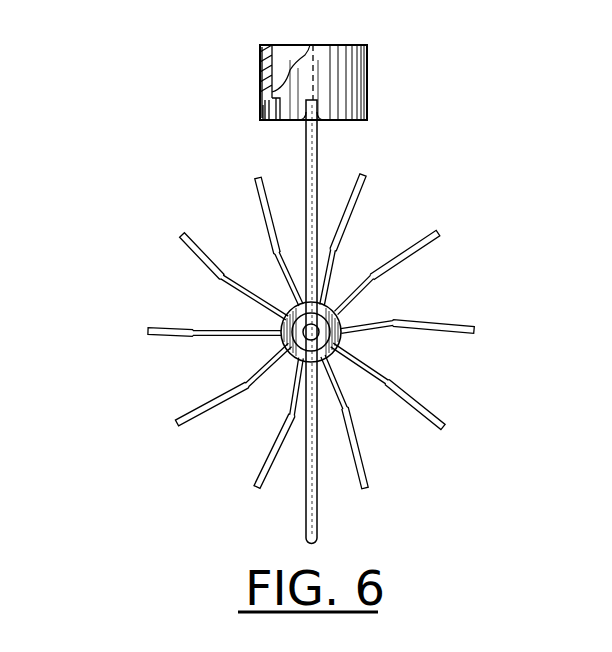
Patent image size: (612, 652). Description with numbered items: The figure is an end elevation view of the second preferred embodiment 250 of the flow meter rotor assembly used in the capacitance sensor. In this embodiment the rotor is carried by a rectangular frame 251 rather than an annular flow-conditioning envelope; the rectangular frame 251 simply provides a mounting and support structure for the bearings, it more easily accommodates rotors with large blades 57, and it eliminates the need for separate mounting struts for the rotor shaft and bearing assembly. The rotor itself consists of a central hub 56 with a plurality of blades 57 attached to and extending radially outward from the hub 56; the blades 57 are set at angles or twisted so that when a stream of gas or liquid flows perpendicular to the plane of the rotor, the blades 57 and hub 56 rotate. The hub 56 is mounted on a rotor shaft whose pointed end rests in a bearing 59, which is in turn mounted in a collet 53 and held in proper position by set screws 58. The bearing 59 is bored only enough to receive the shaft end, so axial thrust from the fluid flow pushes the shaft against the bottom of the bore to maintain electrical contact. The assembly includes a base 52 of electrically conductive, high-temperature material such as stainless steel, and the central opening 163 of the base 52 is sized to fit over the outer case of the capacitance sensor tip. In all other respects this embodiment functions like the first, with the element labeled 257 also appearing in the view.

The base 52 is at (366, 67).
The collet 53 is at (342, 318).
The central hub 56 is at (339, 341).
The blades 57 is at (217, 275).
The set screws 58 is at (320, 340).
The bearing 59 is at (287, 345).
The central opening 163 is at (268, 58).
The second preferred embodiment of the flow meter rotor assembly 250 is at (259, 80).
The rectangular frame 251 is at (318, 152).
The brush arm tip 257 is at (181, 236).